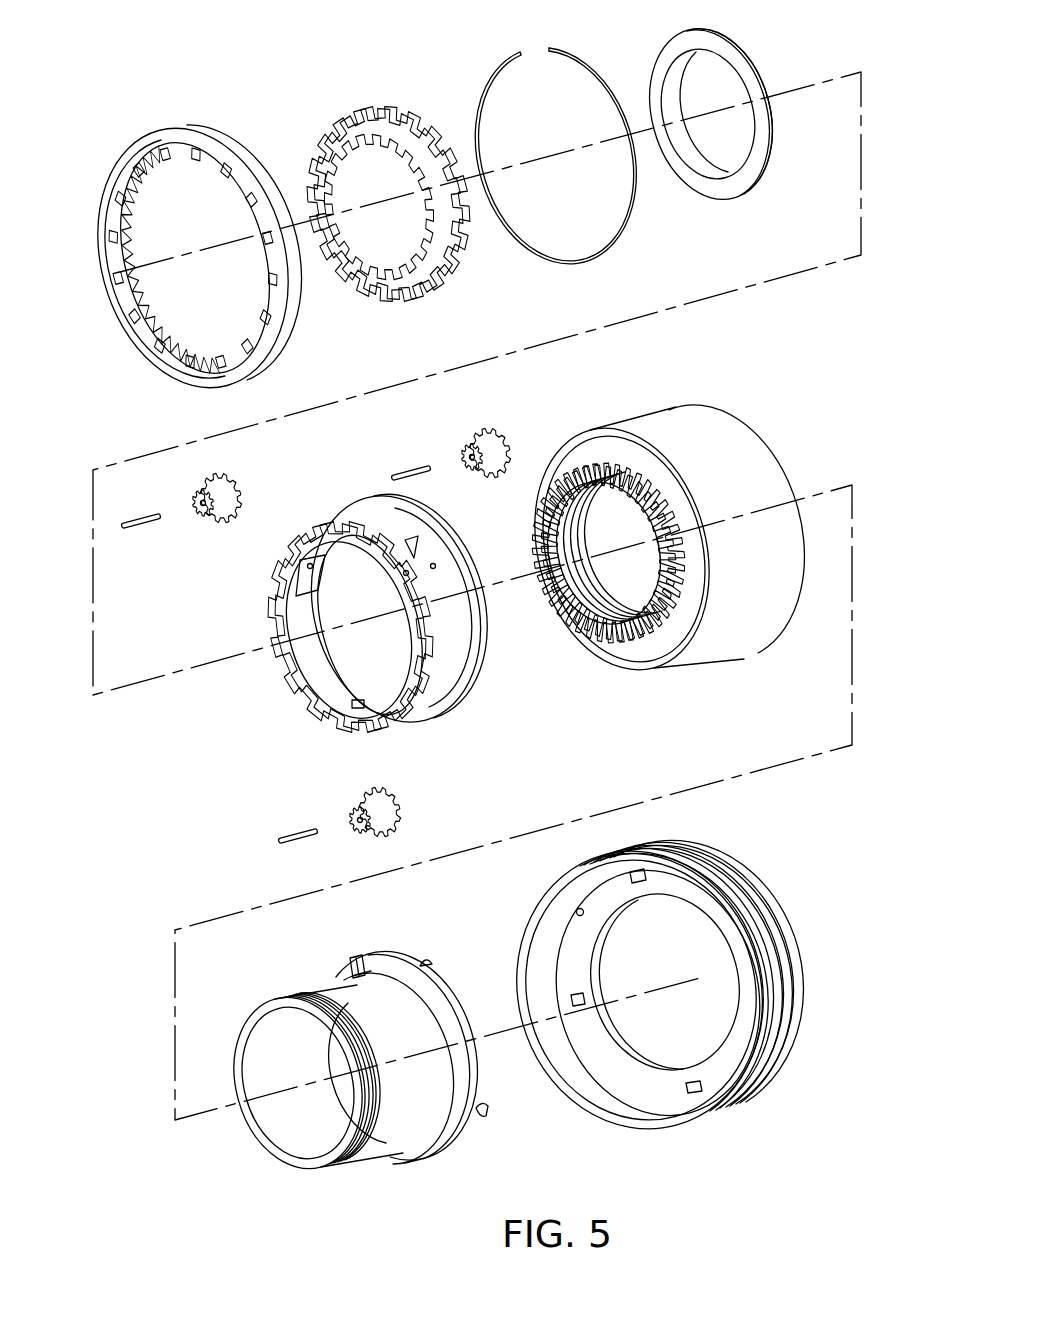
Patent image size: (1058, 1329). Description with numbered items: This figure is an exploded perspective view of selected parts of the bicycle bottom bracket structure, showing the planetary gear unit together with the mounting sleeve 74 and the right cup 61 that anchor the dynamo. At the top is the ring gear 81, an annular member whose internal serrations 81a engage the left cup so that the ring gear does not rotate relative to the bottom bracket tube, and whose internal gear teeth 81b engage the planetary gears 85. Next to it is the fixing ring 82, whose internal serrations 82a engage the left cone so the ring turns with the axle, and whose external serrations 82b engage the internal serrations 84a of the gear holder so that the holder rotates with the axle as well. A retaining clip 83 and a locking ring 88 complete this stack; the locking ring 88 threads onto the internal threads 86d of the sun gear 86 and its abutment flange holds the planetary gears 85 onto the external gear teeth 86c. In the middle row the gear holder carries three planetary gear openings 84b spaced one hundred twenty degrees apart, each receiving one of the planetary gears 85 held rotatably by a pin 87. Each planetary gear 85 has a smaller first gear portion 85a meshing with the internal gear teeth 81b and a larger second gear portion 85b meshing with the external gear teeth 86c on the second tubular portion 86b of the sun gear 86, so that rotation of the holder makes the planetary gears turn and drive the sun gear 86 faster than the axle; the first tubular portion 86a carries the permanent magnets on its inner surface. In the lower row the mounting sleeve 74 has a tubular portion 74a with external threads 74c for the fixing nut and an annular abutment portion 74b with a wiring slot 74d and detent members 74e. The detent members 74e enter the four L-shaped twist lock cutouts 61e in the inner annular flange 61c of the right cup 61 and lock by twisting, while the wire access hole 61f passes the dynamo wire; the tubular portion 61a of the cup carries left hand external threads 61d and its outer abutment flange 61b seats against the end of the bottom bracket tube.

The ring gear 81 is at (189, 232).
The internal serrations 81a is at (98, 262).
The internal gear teeth 81b is at (135, 232).
The fixing ring 82 is at (388, 174).
The internal serrations 82a is at (350, 163).
The external serrations 82b is at (432, 148).
The retaining clip 83 is at (578, 46).
The locking ring 88 is at (750, 47).
The planetary gears 85 is at (338, 626).
The first gear portion 85a is at (205, 516).
The second gear portion 85b is at (243, 515).
The pins 87 is at (142, 525).
The internal serrations 84a is at (305, 695).
The planetary gear openings 84b is at (443, 578).
The sun gear 86 is at (664, 543).
The first tubular portion 86a is at (735, 650).
The second tubular portion 86b is at (603, 640).
The external gear teeth 86c is at (652, 632).
The internal threads 86d is at (560, 600).
The mounting sleeve 74 is at (383, 1061).
The tubular portion 74a is at (388, 1140).
The annular abutment portion 74b is at (440, 1148).
The external threads 74c is at (356, 1170).
The wiring opening or slot 74d is at (345, 962).
The detent members 74e is at (432, 966).
The right cup 61 is at (672, 993).
The tubular portion 61a is at (607, 1112).
The outer abutment flange 61b is at (775, 947).
The inner annular flange 61c is at (620, 1065).
The external threads 61d is at (745, 1095).
The twist lock cutouts 61e is at (646, 865).
The wire access hole 61f is at (590, 913).